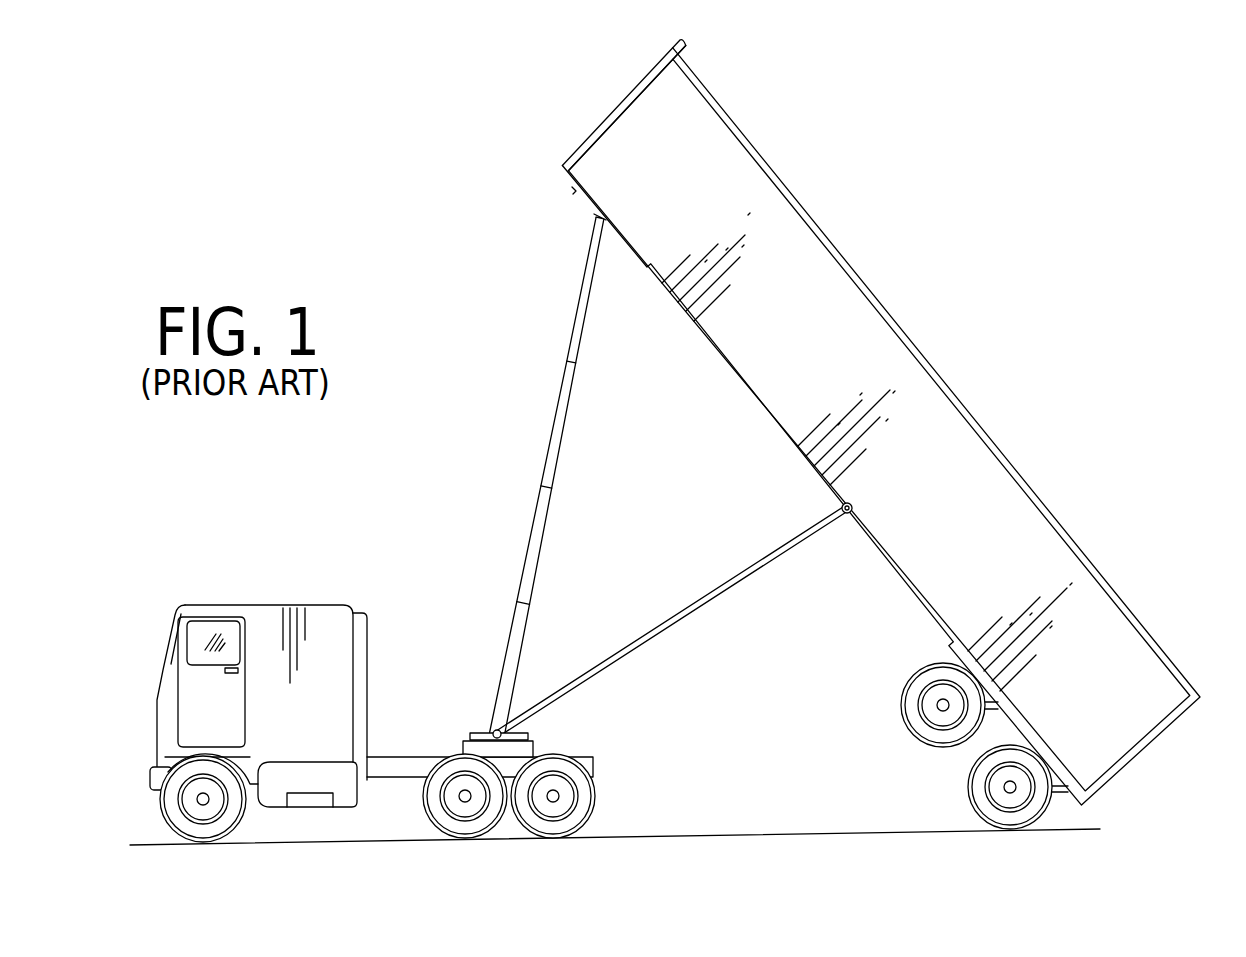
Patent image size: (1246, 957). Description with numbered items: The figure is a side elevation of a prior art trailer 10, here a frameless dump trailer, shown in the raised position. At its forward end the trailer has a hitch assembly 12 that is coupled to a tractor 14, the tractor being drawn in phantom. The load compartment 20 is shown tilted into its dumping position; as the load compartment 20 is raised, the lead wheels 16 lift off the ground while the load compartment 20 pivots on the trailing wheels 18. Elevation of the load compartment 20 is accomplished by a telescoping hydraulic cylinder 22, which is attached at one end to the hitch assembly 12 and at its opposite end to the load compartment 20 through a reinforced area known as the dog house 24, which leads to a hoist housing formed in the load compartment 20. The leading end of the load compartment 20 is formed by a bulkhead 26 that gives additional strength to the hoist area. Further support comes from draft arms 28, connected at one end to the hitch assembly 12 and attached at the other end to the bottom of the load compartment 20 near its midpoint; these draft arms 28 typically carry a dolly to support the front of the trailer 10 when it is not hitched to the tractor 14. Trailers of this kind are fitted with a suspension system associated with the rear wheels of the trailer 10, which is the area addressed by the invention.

The trailer 10 is at (887, 268).
The hitch assembly 12 is at (470, 722).
The tractor 14 is at (274, 613).
The lead wheels 16 is at (913, 708).
The trailing wheels 18 is at (977, 784).
The load compartment 20 is at (948, 445).
The telescoping hydraulic cylinder 22 is at (551, 455).
The dog house 24 is at (590, 212).
The bulkhead 26 is at (660, 62).
The draft arms 28 is at (727, 592).